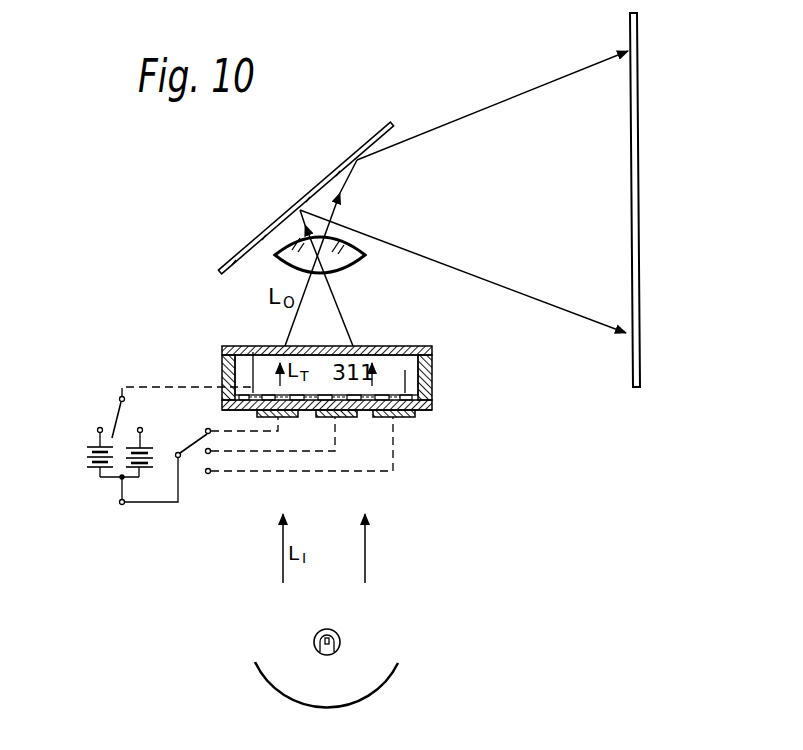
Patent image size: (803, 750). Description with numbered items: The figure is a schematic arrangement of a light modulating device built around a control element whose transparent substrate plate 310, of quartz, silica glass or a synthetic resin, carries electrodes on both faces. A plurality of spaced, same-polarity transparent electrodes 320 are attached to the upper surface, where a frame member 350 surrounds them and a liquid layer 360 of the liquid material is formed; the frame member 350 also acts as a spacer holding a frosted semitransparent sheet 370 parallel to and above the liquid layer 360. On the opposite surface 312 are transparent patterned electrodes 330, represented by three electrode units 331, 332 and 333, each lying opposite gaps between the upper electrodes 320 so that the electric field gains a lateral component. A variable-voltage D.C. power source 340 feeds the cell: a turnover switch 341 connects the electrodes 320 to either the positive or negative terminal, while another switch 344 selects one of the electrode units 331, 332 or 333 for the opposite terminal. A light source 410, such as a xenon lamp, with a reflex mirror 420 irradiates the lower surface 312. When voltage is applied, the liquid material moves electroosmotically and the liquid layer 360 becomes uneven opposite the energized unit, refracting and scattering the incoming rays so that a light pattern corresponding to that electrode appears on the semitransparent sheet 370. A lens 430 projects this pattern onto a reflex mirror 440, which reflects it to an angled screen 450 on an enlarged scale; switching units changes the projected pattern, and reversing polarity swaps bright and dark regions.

The transparent substrate plate 310 is at (433, 404).
The opposite surface 312 is at (417, 411).
The electrodes 320 is at (253, 347).
The patterned electrodes 330 is at (242, 420).
The electrode unit 331 is at (288, 417).
The electrode unit 332 is at (340, 417).
The electrode unit 333 is at (400, 413).
The D.C. power source 340 is at (97, 470).
The turnover switch 341 is at (120, 399).
The switch 344 is at (193, 453).
The frame member 350 is at (222, 372).
The liquid layer 360 is at (383, 387).
The semitransparent sheet 370 is at (397, 346).
The light source 410 is at (345, 637).
The reflex mirror 420 is at (398, 667).
The lens 430 is at (352, 265).
The reflex mirror 440 is at (363, 152).
The screen 450 is at (632, 247).